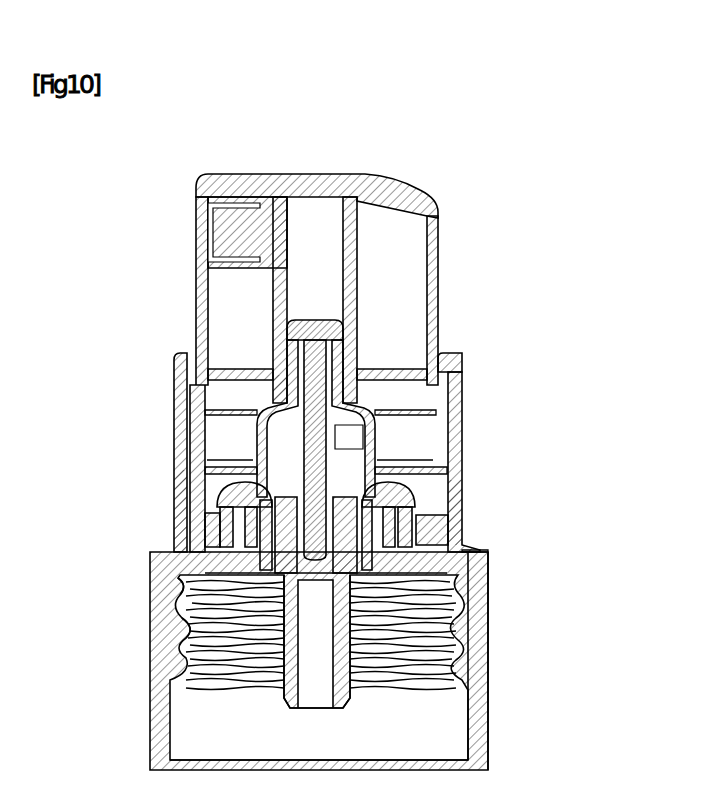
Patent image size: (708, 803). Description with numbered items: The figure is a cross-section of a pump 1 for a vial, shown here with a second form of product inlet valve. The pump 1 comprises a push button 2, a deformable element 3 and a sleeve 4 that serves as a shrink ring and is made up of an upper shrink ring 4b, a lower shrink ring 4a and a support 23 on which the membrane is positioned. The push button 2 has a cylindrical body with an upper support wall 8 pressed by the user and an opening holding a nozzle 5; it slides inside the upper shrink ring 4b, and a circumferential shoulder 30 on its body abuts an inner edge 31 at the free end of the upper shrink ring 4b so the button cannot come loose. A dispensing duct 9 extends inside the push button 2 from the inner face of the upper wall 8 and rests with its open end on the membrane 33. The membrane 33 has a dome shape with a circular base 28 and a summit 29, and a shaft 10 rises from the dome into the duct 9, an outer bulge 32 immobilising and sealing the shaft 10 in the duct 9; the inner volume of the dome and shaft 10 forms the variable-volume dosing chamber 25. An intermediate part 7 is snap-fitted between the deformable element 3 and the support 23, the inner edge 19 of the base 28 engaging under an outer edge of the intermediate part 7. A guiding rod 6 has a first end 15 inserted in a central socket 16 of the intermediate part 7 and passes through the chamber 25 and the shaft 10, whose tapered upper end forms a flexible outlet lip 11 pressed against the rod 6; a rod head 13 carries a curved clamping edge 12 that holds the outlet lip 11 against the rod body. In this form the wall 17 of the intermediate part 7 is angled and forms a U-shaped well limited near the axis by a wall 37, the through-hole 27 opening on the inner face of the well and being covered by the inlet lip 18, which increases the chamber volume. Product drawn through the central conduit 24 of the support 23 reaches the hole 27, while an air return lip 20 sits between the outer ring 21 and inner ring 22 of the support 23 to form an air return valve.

The pump 1 is at (122, 157).
The push button 2 is at (205, 297).
The deformable element 3 is at (254, 434).
The sleeve 4 is at (180, 667).
The lower shrink ring 4a is at (150, 757).
The upper shrink ring 4b is at (174, 478).
The nozzle 5 is at (206, 232).
The rod 6 is at (176, 460).
The intermediate part 7 is at (195, 612).
The upper support wall 8 is at (384, 188).
The dispensing duct 9 is at (358, 250).
The shaft 10 is at (205, 388).
The outlet lip 11 is at (366, 352).
The clamping edge 12 is at (332, 335).
The rod head 13 is at (322, 318).
The first end 15 is at (450, 577).
The central socket 16 is at (480, 617).
The wall 17 is at (470, 553).
The inlet lip 18 is at (375, 455).
The inner edge 19 is at (150, 557).
The air return lip 20 is at (464, 503).
The outer ring 21 is at (190, 532).
The inner ring 22 is at (198, 508).
The support 23 is at (192, 640).
The central conduit 24 is at (197, 683).
The dosing chamber 25 is at (349, 438).
The through-hole 27 is at (195, 588).
The base 28 is at (408, 487).
The summit 29 is at (400, 400).
The circumferential shoulder 30 is at (463, 380).
The inner edge 31 is at (458, 360).
The outer bulge 32 is at (283, 372).
The membrane 33 is at (378, 438).
The wall 37 is at (430, 532).